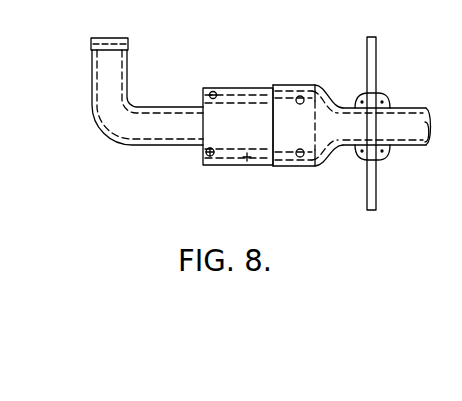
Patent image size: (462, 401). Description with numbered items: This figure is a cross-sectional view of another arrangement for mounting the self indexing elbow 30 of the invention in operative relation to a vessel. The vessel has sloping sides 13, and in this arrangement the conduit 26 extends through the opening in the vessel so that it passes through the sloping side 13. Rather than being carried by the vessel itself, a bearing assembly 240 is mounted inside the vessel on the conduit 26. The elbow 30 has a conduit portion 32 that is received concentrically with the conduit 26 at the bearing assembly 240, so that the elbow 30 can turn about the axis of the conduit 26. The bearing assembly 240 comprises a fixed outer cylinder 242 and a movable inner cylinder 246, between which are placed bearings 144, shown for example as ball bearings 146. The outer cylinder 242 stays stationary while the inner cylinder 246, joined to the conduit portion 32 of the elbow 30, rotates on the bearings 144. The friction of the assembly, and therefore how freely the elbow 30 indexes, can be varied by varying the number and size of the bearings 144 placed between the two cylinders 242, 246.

The sloping sides 13 is at (377, 62).
The second conduit 26 is at (415, 106).
The elbow 30 is at (126, 115).
The conduit portion 32 is at (128, 78).
The bearings 144 is at (247, 160).
The ball bearings 146 is at (213, 165).
The bearing assembly 240 is at (238, 127).
The fixed outer cylinder 242 is at (215, 88).
The movable inner cylinder 246 is at (205, 153).